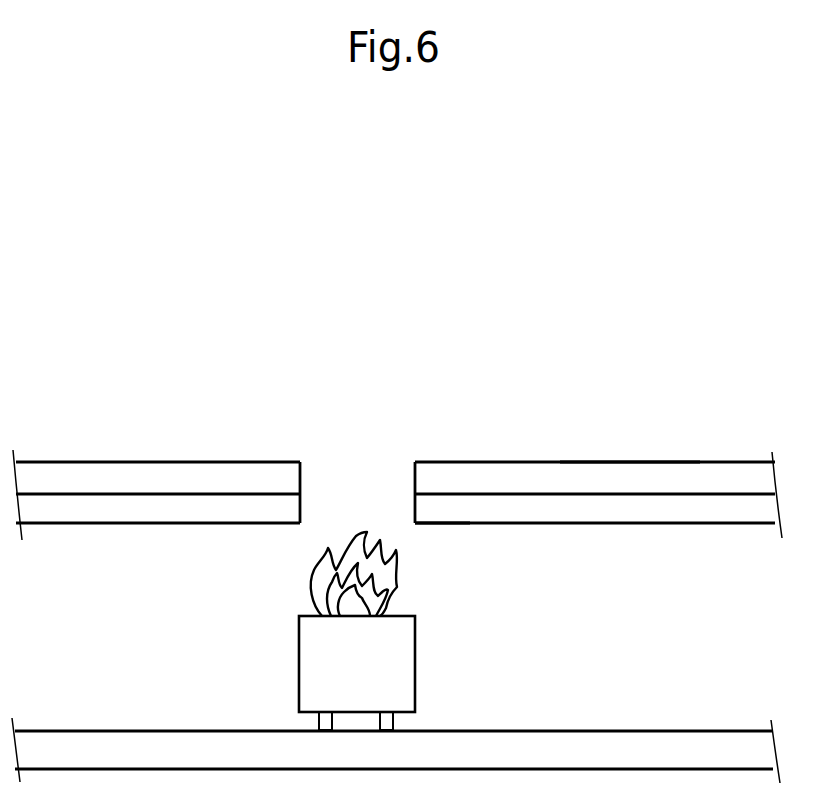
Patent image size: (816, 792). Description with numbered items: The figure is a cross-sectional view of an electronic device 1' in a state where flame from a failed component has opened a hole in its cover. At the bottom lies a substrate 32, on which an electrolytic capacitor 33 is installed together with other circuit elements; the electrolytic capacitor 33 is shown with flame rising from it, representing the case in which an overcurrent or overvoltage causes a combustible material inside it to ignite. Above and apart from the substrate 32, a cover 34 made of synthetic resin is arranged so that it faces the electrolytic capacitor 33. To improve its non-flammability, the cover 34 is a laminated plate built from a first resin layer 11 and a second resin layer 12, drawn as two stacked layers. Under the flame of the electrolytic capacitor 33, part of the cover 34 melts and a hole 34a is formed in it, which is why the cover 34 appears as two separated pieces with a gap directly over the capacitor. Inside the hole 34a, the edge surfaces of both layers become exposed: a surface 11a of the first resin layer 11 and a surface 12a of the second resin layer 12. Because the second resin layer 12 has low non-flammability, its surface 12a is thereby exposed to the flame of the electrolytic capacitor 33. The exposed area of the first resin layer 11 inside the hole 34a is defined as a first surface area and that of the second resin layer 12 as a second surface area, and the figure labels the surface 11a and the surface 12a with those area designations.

The electronic device 1' is at (233, 449).
The surface of the second resin layer 12a is at (301, 480).
The surface of the first resin layer 11a is at (301, 513).
The second resin layer 12 is at (702, 471).
The first resin layer 11 is at (707, 515).
The cover 34 is at (643, 458).
The hole 34a is at (375, 508).
The electrolytic capacitor 33 is at (416, 668).
The substrate 32 is at (671, 730).